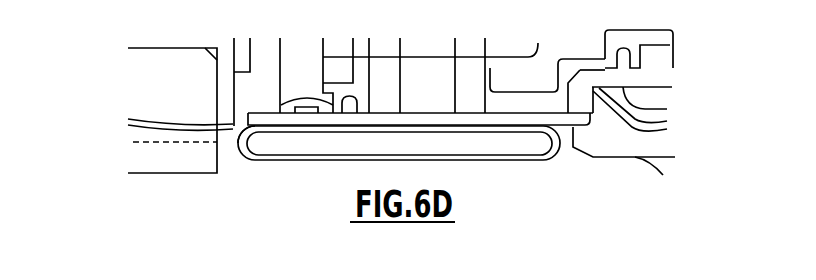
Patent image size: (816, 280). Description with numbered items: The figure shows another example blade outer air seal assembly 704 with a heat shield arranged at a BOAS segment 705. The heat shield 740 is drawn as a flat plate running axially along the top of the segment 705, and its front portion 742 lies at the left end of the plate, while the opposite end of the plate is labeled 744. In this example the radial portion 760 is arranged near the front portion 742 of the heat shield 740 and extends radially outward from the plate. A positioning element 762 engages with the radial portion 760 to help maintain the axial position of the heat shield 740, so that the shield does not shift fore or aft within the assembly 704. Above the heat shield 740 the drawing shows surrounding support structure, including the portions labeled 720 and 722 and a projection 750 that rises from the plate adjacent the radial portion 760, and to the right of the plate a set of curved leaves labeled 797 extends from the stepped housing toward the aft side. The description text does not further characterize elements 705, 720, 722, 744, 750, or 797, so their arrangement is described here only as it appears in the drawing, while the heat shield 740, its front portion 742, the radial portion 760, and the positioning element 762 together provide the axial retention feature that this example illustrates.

The assembly 704 is at (702, 76).
The seal / gasket 705 is at (532, 148).
The housing wall 720 is at (390, 87).
The housing step 722 is at (490, 68).
The heat shield 740 is at (338, 122).
The front portion 742 is at (243, 128).
The plate right end 744 is at (585, 125).
The bump / projection 750 is at (355, 108).
The radial portion 760 is at (305, 112).
The positioning element 762 is at (312, 108).
The flexible contact leaves 797 is at (652, 140).